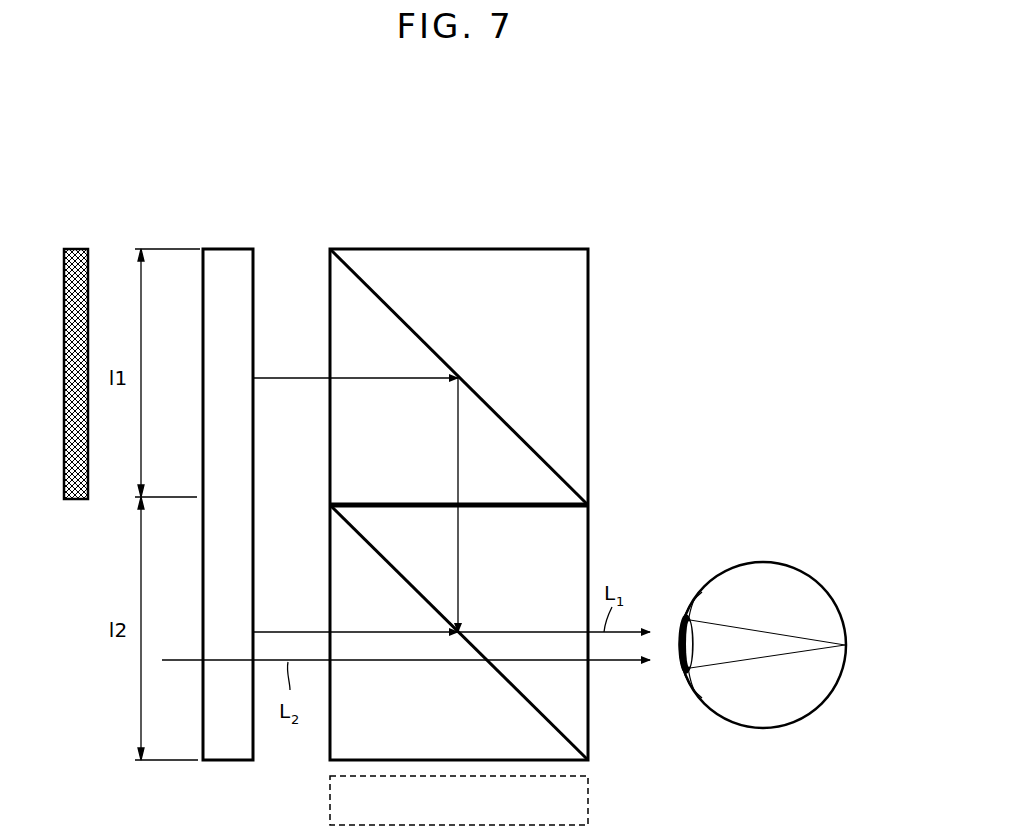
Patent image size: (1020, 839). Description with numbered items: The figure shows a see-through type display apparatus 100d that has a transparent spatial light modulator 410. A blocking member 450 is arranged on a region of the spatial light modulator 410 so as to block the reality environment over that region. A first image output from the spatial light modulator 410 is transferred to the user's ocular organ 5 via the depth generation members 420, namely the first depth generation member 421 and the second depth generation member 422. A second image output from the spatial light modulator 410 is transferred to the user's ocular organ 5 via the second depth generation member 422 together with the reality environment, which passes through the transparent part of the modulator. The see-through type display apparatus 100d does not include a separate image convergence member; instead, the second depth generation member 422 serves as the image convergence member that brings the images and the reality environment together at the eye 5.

The see-through type display apparatus 100d is at (690, 217).
The blocking member 450 is at (76, 249).
The spatial light modulator 410 is at (235, 249).
The depth generation members 420 is at (529, 504).
The first depth generation member 421 is at (582, 401).
The second depth generation member 422 is at (494, 632).
The ocular organ 5 is at (766, 727).